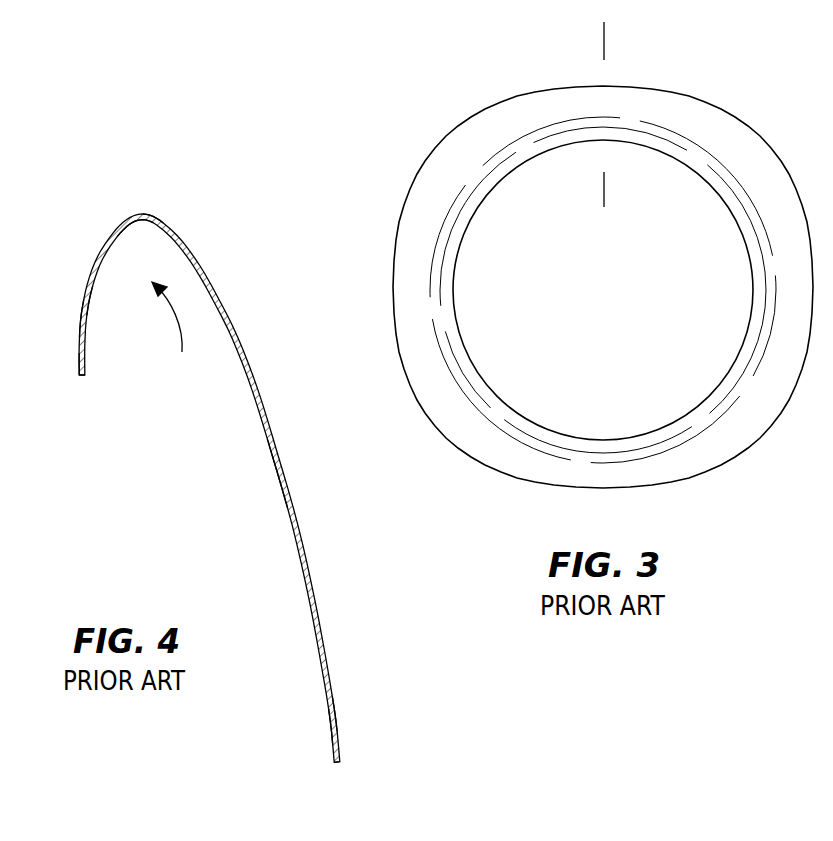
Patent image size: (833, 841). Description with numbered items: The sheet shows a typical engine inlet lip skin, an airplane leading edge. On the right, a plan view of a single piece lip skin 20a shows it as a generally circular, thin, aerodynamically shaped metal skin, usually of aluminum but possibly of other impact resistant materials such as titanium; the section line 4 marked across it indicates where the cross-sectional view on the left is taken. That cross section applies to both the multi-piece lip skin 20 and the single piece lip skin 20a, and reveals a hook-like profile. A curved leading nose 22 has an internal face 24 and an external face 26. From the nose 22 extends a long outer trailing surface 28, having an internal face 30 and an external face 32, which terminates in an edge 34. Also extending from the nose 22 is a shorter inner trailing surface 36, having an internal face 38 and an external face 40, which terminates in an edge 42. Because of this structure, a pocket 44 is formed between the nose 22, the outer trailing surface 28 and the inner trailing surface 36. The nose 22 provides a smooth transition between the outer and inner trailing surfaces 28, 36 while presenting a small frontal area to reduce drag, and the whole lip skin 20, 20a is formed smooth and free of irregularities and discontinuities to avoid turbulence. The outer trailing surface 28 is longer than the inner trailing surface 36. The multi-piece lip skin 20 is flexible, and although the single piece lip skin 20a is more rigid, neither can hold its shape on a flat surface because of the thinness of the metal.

In FIG. 4, the multi-piece lip skin 20 is at (209, 488).
In FIG. 4, the single piece lip skin 20a is at (253, 307).
In FIG. 3, the single piece lip skin 20a is at (433, 137).
In FIG. 4, the curved leading nose 22 is at (142, 216).
In FIG. 4, the internal face 24 is at (144, 222).
In FIG. 4, the external face 26 is at (136, 215).
In FIG. 4, the outer trailing surface 28 is at (286, 465).
In FIG. 4, the internal face 30 is at (332, 733).
In FIG. 4, the external face 32 is at (331, 690).
In FIG. 4, the edge 34 is at (338, 768).
In FIG. 4, the inner trailing surface 36 is at (78, 316).
In FIG. 4, the internal face 38 is at (92, 292).
In FIG. 4, the external face 40 is at (79, 356).
In FIG. 4, the edge 42 is at (84, 378).
In FIG. 4, the pocket 44 is at (173, 330).
In FIG. 3, the section line 4- 4 is at (605, 40).